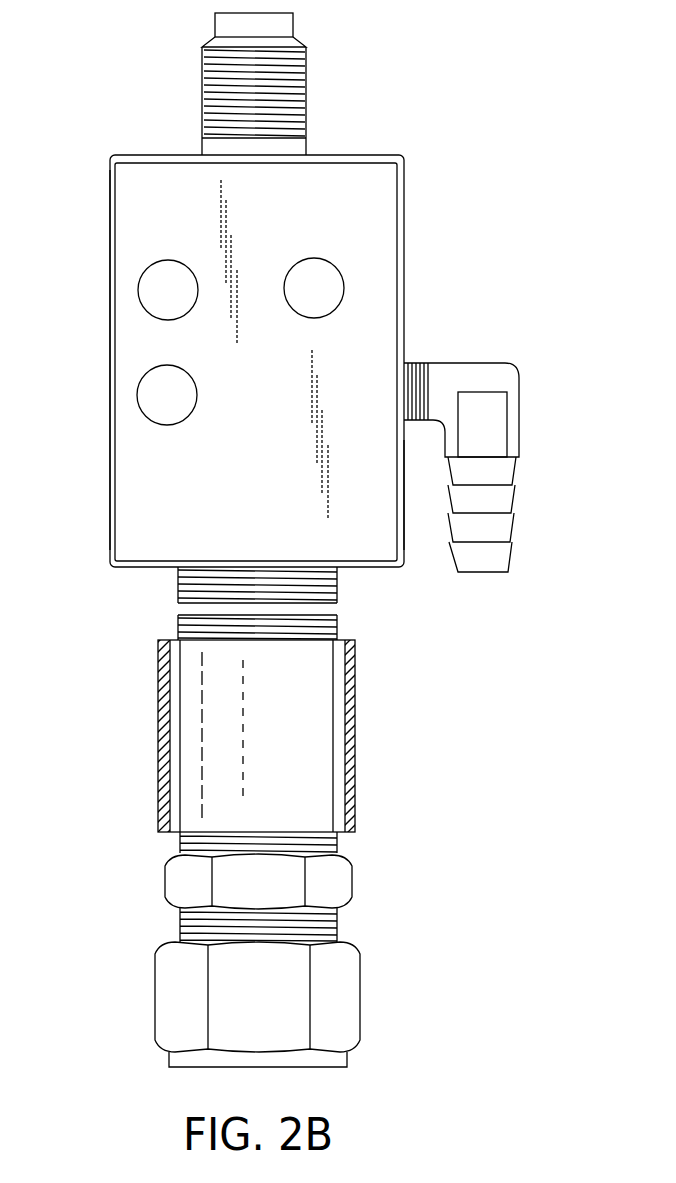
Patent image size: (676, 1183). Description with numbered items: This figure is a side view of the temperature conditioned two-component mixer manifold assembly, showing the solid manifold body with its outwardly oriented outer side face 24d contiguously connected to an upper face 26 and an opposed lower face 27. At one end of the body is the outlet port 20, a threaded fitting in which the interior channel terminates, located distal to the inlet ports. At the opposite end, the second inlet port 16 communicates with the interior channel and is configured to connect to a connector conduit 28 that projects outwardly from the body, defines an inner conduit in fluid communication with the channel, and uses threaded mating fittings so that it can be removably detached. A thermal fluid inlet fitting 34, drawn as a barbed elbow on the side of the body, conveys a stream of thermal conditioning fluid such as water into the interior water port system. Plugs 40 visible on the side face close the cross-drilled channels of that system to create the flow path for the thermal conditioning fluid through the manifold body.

The outlet port 20 is at (293, 27).
The outer side face 24d is at (404, 222).
The lower face 27 is at (109, 497).
The upper face 26 is at (405, 523).
The plug 40 is at (168, 287).
The thermal fluid inlet fitting 34 is at (520, 418).
The second inlet port 16 is at (180, 577).
The connector conduit 28 is at (158, 735).